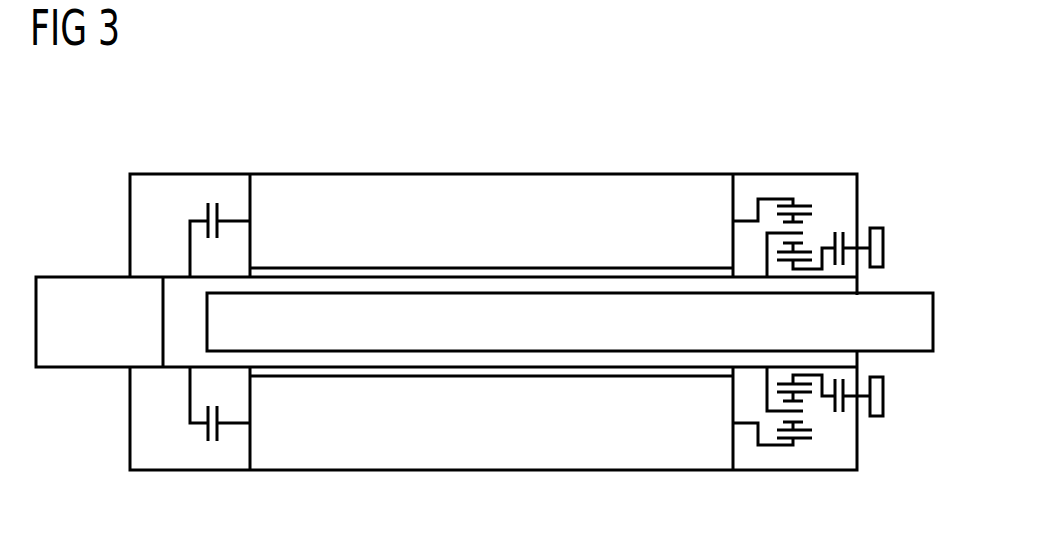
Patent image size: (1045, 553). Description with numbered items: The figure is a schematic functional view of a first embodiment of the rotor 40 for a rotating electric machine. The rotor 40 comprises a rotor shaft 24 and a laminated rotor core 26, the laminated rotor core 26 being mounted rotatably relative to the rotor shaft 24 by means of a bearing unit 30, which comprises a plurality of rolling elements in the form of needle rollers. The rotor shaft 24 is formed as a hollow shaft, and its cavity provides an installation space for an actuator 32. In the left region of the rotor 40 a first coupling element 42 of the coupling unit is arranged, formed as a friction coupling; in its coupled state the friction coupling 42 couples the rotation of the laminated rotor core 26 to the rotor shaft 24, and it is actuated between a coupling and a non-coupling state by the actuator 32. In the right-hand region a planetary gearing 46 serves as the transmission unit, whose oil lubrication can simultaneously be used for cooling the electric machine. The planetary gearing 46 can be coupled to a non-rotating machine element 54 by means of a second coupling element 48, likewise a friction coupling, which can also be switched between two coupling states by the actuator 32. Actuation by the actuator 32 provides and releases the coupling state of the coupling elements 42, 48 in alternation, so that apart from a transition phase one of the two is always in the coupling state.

The rotor 40 is at (712, 101).
The first coupling element 42 is at (209, 184).
The bearing unit 30 is at (468, 273).
The laminated rotor core 26 is at (600, 188).
The planetary gearing 46 is at (810, 185).
The second coupling element 48 is at (846, 207).
The non-rotating machine element 54 is at (883, 248).
The rotor shaft 24 is at (370, 358).
The actuator 32 is at (553, 330).